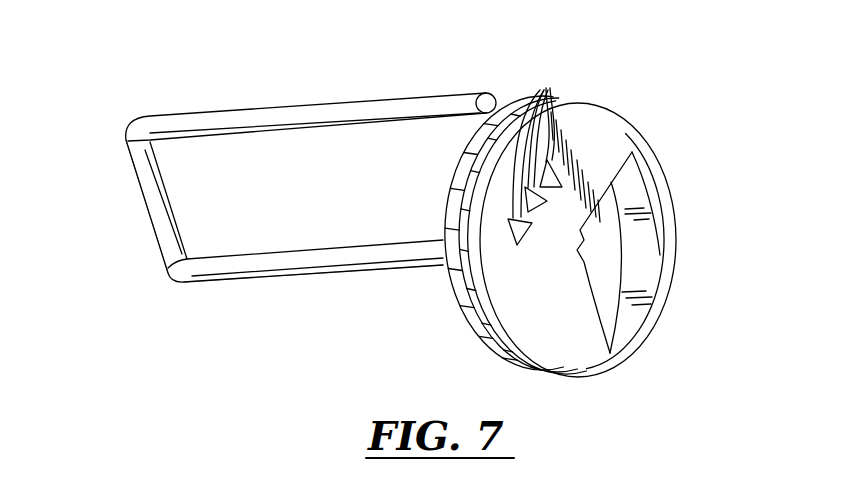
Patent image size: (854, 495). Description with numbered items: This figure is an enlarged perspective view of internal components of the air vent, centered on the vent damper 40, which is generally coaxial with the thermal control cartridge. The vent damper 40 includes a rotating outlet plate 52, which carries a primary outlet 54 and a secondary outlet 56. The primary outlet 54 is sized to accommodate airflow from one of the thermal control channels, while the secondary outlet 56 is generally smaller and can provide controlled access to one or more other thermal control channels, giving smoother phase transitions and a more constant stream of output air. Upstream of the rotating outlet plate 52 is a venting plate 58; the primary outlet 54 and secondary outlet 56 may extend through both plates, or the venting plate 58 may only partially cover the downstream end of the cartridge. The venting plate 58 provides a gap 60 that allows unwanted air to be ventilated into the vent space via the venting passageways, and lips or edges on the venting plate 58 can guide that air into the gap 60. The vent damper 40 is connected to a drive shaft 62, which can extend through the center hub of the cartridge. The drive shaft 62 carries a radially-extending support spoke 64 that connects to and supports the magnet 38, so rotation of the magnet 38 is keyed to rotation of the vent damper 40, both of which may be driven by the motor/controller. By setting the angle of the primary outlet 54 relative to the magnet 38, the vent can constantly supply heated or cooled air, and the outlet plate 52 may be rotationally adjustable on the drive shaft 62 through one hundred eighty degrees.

The magnet 38 is at (305, 108).
The radially-extending support spoke 64 is at (147, 206).
The drive shaft 62 is at (308, 260).
The vent damper 40 is at (614, 118).
The rotating outlet plate 52 is at (608, 366).
The primary outlet 54 is at (645, 234).
The secondary outlet 56 is at (535, 147).
The venting plate 58 is at (455, 292).
The gap 60 is at (484, 323).